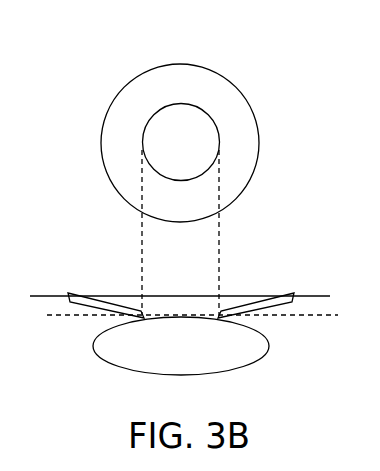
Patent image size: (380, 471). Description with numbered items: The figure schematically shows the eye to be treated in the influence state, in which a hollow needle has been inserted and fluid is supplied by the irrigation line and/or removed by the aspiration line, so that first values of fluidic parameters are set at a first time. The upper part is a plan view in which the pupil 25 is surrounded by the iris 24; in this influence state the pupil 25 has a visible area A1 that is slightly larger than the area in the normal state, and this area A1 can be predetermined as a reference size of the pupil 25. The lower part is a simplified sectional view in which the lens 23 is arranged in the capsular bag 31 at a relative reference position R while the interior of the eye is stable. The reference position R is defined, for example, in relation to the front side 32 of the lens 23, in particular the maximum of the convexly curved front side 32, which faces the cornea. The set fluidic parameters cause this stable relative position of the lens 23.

The iris 24 is at (235, 135).
The pupil 25 is at (170, 140).
The area of the pupil A1 is at (177, 123).
The reference position R is at (78, 317).
The front side 32 is at (173, 316).
The lens 23 is at (118, 350).
The capsular bag 31 is at (269, 345).